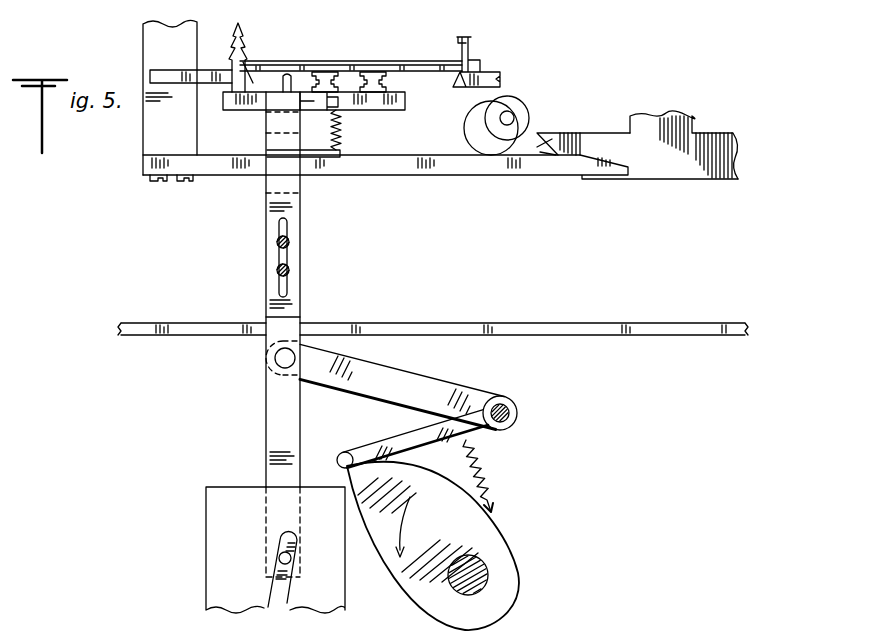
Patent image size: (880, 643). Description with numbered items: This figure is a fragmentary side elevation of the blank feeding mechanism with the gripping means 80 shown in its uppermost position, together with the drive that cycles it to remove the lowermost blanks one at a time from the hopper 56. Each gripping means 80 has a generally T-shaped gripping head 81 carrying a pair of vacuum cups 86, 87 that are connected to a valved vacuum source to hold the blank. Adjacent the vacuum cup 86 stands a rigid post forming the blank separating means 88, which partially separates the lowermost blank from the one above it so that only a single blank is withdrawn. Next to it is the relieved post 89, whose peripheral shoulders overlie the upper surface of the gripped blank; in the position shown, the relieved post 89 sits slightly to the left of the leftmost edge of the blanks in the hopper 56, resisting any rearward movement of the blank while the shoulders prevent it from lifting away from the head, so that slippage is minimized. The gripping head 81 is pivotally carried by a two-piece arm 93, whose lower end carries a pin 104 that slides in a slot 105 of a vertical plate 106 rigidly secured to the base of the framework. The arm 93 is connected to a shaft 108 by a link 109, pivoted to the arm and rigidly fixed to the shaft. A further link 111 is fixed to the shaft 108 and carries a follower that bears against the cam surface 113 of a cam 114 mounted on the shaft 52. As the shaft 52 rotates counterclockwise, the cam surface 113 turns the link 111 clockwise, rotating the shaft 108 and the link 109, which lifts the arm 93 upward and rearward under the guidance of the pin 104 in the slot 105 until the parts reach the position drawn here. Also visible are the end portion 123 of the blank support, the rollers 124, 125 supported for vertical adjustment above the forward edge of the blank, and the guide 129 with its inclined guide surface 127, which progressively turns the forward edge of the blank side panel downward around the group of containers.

The shaft 52 is at (482, 574).
The hopper 56 is at (465, 52).
The blank gripping means 80 is at (255, 120).
The gripping head 81 is at (400, 113).
The vacuum cup 86 is at (327, 80).
The vacuum cup 87 is at (382, 80).
The blank separating means 88 is at (291, 76).
The relieved post 89 is at (240, 50).
The arm 93 is at (284, 404).
The pin 104 is at (279, 559).
The slot 105 is at (268, 607).
The vertical plate 106 is at (242, 520).
The shaft 108 is at (513, 412).
The link 109 is at (443, 362).
The link 111 is at (400, 436).
The cam surface 113 is at (455, 466).
The cam 114 is at (448, 535).
The end portion 123 is at (175, 131).
The roller 124 is at (465, 134).
The roller 125 is at (516, 112).
The inclined guide surface 127 is at (547, 133).
The guide 129 is at (723, 160).